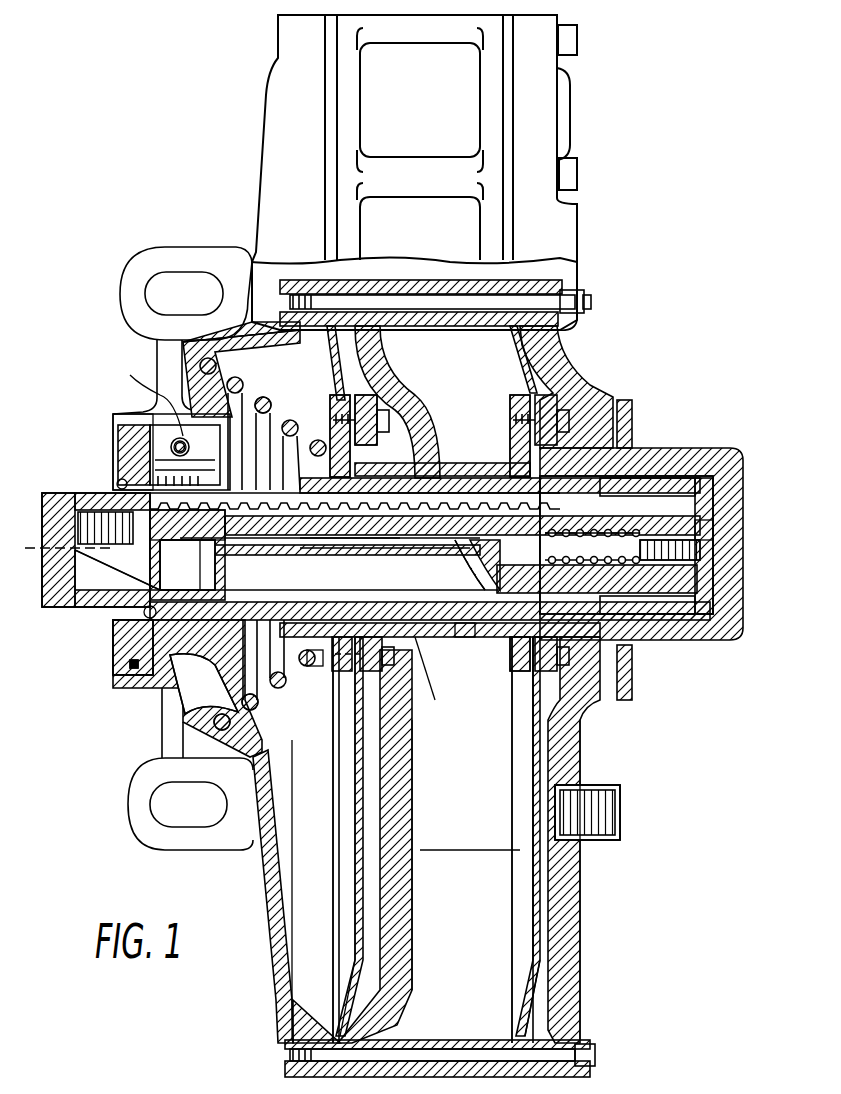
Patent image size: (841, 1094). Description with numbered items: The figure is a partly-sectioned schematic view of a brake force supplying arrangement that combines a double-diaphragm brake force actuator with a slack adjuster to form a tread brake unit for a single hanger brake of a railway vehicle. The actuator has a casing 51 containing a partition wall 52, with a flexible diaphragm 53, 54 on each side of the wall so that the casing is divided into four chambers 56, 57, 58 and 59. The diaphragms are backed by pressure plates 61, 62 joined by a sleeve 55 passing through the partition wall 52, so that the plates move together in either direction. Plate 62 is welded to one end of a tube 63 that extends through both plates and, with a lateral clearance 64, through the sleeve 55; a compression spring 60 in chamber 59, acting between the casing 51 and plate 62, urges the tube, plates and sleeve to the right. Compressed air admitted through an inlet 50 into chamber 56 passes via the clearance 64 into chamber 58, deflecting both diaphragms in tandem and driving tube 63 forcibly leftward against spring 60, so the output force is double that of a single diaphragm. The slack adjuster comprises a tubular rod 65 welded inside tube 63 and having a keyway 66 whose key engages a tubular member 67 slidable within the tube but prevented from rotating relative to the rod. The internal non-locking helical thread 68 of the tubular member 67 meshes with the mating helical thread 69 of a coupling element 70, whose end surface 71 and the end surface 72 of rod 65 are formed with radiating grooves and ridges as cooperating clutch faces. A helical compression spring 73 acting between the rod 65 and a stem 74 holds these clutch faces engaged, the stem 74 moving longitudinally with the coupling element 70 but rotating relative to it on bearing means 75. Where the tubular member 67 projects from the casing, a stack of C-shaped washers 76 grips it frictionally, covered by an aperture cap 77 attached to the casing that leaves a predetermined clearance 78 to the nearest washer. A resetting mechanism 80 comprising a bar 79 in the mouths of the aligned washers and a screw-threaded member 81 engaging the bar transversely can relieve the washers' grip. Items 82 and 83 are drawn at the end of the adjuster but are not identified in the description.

The inlet 50 is at (605, 812).
The casing 51 is at (580, 990).
The partition wall 52 is at (412, 990).
The flexible diaphragm 53 is at (535, 920).
The flexible diaphragm 54 is at (358, 900).
The sleeve 55 is at (482, 637).
The chamber 56 is at (540, 975).
The chamber 57 is at (475, 884).
The chamber 58 is at (362, 975).
The chamber 59 is at (318, 869).
The compression spring 60 is at (258, 702).
The pressure plate 61 is at (515, 773).
The pressure plate 62 is at (335, 767).
The tube 63 is at (427, 495).
The lateral clearance 64 is at (462, 478).
The tubular rod 65 is at (330, 450).
The keyway 66 is at (385, 512).
The tubular member 67 is at (268, 410).
The non-locking helical thread 68 is at (75, 494).
The mating helical thread 69 is at (140, 613).
The coupling element 70 is at (160, 525).
The end surface 71 is at (150, 575).
The end surface 72 is at (305, 553).
The helical compression spring 73 is at (628, 530).
The stem 74 is at (490, 550).
The bearing means 75 is at (175, 545).
The C-shaped washers 76 is at (120, 480).
The aperture cap 77 is at (128, 665).
The predetermined clearance 78 is at (130, 648).
The bar 79 is at (152, 372).
The resetting mechanism 80 is at (118, 432).
The screw-threaded member 81 is at (176, 440).
The plug 82 is at (715, 535).
The spring seat 83 is at (710, 552).